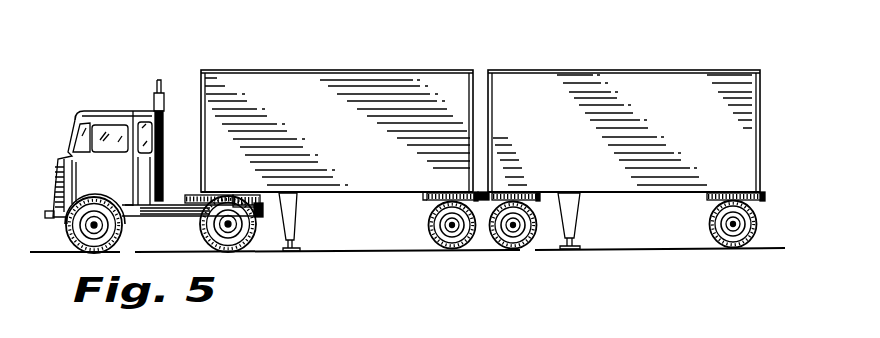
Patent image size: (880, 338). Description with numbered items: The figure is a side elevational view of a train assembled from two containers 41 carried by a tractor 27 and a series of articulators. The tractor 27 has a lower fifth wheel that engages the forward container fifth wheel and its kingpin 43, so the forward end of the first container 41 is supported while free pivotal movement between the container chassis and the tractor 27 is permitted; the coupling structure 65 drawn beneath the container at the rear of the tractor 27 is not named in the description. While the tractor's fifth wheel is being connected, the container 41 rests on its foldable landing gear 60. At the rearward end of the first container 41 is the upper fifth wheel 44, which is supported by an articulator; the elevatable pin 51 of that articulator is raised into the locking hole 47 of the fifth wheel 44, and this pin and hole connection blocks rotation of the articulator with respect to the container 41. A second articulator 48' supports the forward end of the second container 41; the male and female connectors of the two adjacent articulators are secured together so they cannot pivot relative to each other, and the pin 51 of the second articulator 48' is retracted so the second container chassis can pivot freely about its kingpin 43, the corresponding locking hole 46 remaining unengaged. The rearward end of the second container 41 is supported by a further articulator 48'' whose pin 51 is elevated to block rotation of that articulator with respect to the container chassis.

The tractor 27 is at (150, 219).
The container 41 is at (359, 126).
The kingpin 43 is at (196, 195).
The fifth wheel 44 is at (420, 198).
The locking hole 46 is at (525, 193).
The locking hole 47 is at (448, 193).
The second articulator 48' is at (459, 240).
The articulator 48'' is at (713, 224).
The elevatable pin 51 is at (451, 192).
The foldable landing gear 60 is at (298, 225).
The coupling block 65 is at (246, 194).